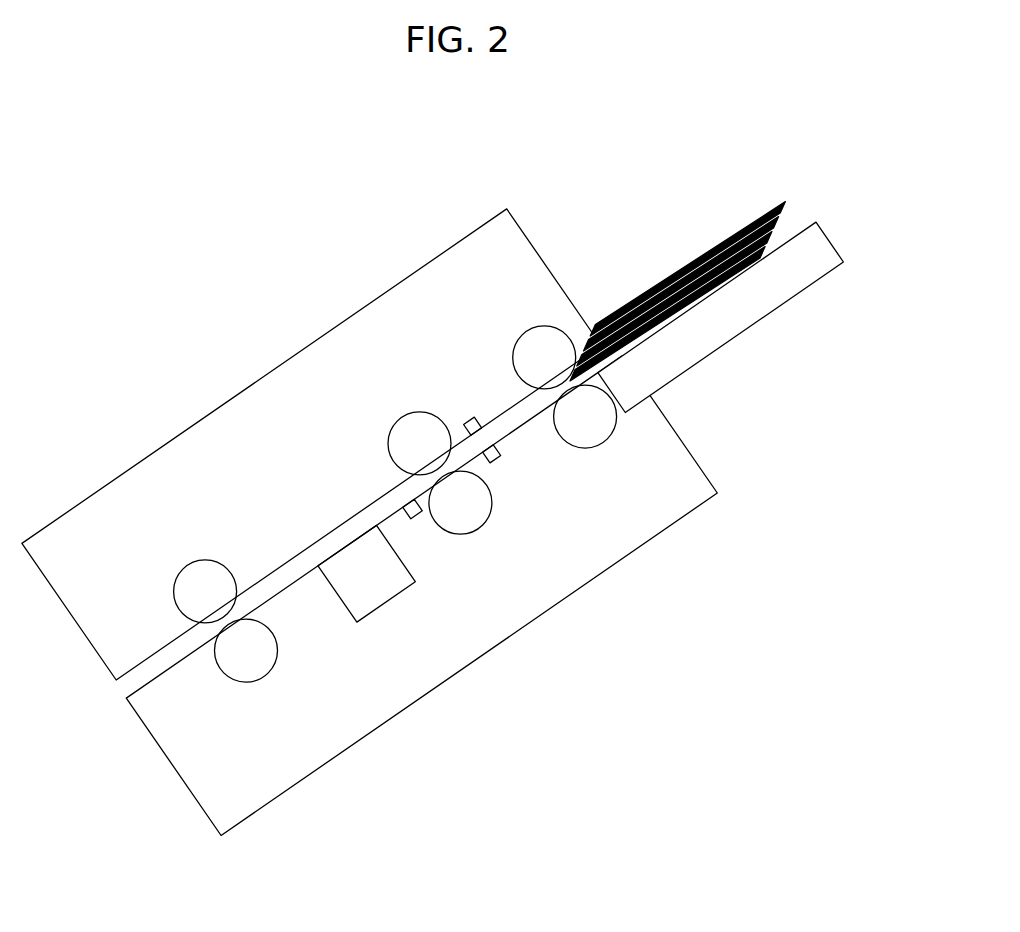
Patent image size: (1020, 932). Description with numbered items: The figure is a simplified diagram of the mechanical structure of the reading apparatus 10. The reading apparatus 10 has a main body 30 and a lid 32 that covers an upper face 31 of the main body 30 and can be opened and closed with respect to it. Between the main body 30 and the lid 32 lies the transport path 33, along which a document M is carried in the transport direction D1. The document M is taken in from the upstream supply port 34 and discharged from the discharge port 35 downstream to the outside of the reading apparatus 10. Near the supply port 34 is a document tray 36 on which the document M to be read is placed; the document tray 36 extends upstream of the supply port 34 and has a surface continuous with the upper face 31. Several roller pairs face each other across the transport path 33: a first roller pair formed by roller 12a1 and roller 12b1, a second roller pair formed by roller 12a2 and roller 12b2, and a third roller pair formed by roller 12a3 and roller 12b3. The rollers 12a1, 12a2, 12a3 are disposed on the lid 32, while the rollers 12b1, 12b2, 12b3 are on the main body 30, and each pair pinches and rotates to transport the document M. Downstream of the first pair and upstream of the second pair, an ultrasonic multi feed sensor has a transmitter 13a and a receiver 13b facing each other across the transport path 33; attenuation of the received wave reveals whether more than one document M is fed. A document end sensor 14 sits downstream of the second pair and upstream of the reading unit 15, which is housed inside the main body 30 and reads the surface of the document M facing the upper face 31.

The reading apparatus 10 is at (337, 305).
The roller 12a1 is at (520, 345).
The roller 12a2 is at (397, 420).
The roller 12a3 is at (207, 560).
The roller 12b1 is at (605, 437).
The roller 12b2 is at (480, 533).
The roller 12b3 is at (240, 683).
The transmitter 13a is at (472, 418).
The receiver 13b is at (500, 460).
The document end sensor 14 is at (420, 523).
The reading unit 15 is at (398, 592).
The main body 30 is at (703, 477).
The upper face 31 is at (528, 424).
The lid 32 is at (458, 237).
The transport path 33 is at (302, 558).
The supply port 34 is at (593, 316).
The discharge port 35 is at (107, 690).
The document tray 36 is at (838, 250).
The document M is at (780, 193).
The transport direction D1 is at (342, 475).